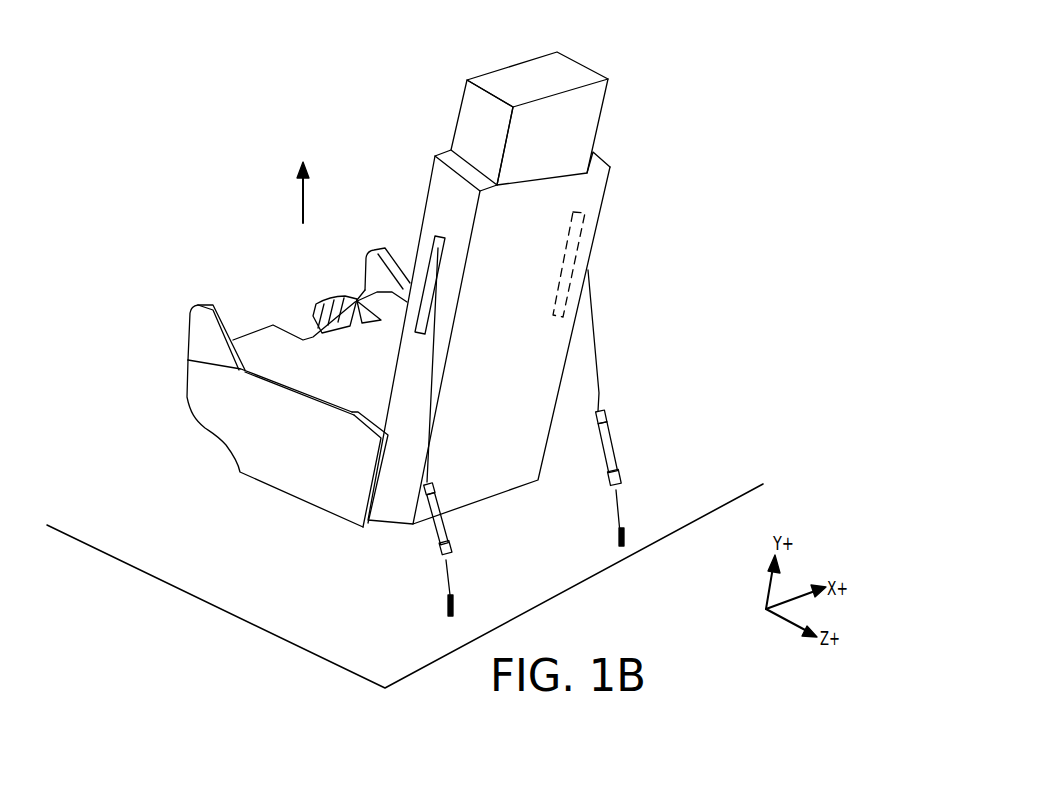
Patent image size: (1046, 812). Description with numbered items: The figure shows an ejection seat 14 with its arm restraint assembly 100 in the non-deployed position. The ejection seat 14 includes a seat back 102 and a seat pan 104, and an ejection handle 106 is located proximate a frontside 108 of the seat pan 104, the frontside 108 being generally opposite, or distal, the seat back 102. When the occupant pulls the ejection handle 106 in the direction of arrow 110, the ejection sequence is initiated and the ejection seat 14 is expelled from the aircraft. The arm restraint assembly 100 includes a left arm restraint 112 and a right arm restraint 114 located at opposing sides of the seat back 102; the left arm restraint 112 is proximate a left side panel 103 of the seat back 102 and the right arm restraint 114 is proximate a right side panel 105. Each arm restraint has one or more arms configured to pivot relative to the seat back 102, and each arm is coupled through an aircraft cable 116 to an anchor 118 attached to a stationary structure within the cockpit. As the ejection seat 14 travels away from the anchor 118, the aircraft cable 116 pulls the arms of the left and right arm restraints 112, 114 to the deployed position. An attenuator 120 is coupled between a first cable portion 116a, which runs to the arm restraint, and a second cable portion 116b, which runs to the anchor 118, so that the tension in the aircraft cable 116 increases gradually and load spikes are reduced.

The ejection seat 14 is at (652, 56).
The arm restraint assembly 100 is at (500, 273).
The seat back 102 is at (524, 288).
The left side panel 103 is at (425, 208).
The seat pan 104 is at (298, 387).
The right side panel 105 is at (605, 160).
The ejection handle 106 is at (308, 307).
The frontside 108 is at (248, 323).
The arrow 110 is at (302, 205).
The left arm restraint 112 is at (430, 242).
The right arm restraint 114 is at (564, 221).
The aircraft cable 116 is at (585, 421).
The first cable portion 116a is at (426, 382).
The second cable portion 116b is at (440, 567).
The anchor 118 is at (438, 607).
The attenuator 120 is at (425, 517).